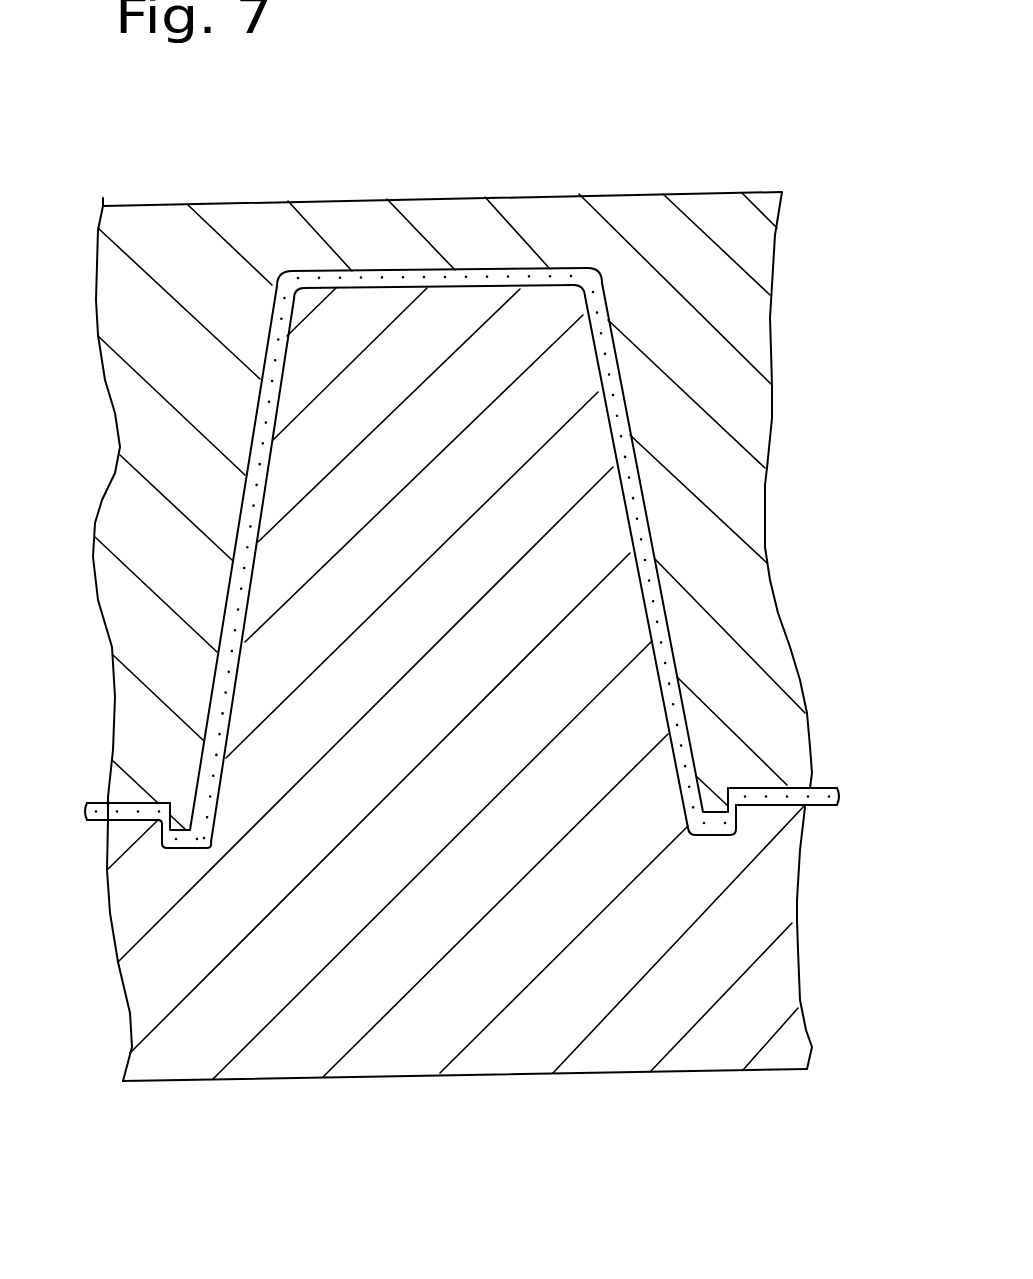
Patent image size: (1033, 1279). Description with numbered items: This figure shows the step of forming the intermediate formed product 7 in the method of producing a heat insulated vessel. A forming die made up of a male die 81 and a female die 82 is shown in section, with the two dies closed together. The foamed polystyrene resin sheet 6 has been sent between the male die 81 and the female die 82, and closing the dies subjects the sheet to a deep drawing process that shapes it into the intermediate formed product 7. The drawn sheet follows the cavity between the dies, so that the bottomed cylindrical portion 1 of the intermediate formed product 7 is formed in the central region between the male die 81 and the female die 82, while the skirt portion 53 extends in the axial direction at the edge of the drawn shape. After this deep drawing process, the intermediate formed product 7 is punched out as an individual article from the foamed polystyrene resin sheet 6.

The bottomed cylindrical portion 1 is at (640, 503).
The female die 82 is at (345, 207).
The male die 81 is at (386, 1066).
The intermediate formed product 7 is at (485, 267).
The foamed polystyrene resin sheet 6 is at (96, 801).
The skirt portion 53 is at (737, 812).